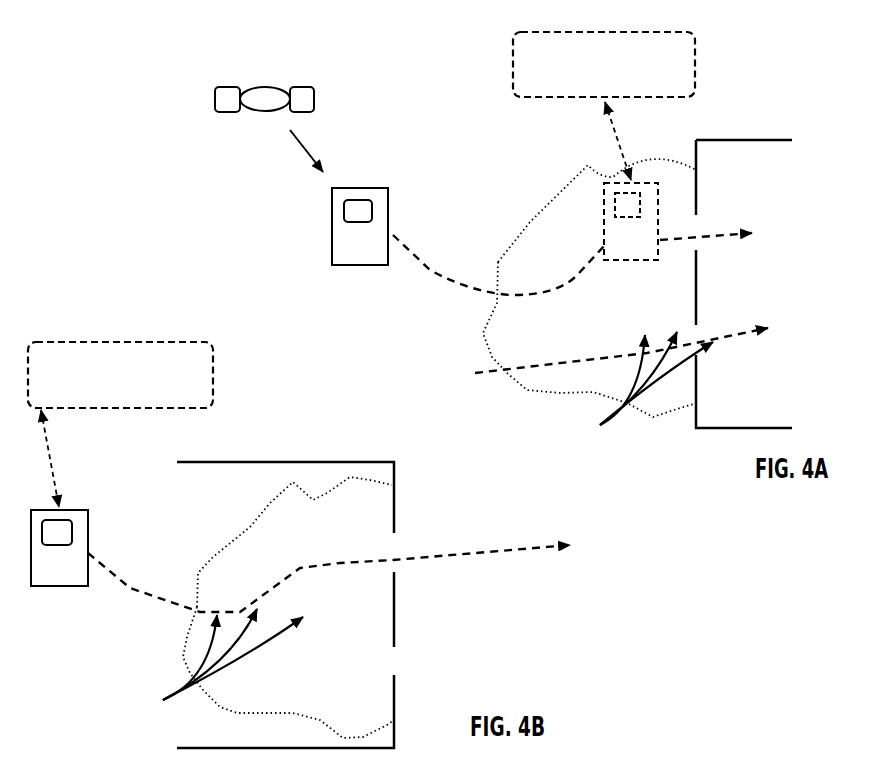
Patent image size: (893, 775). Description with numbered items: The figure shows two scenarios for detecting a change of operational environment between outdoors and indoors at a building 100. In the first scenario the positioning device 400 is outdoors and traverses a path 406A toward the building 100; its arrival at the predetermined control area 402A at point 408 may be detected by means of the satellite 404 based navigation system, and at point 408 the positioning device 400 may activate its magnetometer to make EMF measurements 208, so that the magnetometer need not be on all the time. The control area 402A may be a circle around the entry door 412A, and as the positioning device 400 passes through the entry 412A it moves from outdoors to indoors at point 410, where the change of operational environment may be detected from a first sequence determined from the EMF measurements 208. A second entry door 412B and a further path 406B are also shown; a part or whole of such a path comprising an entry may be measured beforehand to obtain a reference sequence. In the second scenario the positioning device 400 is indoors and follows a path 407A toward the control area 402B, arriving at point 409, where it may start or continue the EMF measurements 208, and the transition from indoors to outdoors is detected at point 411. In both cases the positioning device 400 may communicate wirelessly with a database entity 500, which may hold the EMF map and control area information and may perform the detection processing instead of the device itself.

In FIG. 4A, the building 100 is at (763, 284).
In FIG. 4B, the building 100 is at (277, 605).
In FIG. 4A, the EMF measurements 208 is at (600, 425).
In FIG. 4B, the EMF measurements 208 is at (167, 693).
In FIG. 4A, the positioning device 400 is at (372, 186).
In FIG. 4B, the positioning device 400 is at (70, 508).
In FIG. 4A, the control area 402A is at (588, 165).
In FIG. 4B, the control area 402B is at (250, 527).
In FIG. 4A, the satellite 404 is at (314, 98).
In FIG. 4A, the path 406A is at (432, 265).
In FIG. 4A, the path 406B is at (745, 333).
In FIG. 4B, the path 407A is at (130, 593).
In FIG. 4A, the point 408 is at (500, 293).
In FIG. 4B, the point 409 is at (203, 613).
In FIG. 4A, the point 410 is at (700, 238).
In FIG. 4B, the point 411 is at (397, 560).
In FIG. 4A, the entry door 412A is at (722, 212).
In FIG. 4B, the entry door 412A is at (422, 533).
In FIG. 4A, the entry door 412B is at (706, 323).
In FIG. 4B, the entry door 412B is at (425, 657).
In FIG. 4A, the database entity 500 is at (604, 106).
In FIG. 4B, the database entity 500 is at (120, 424).